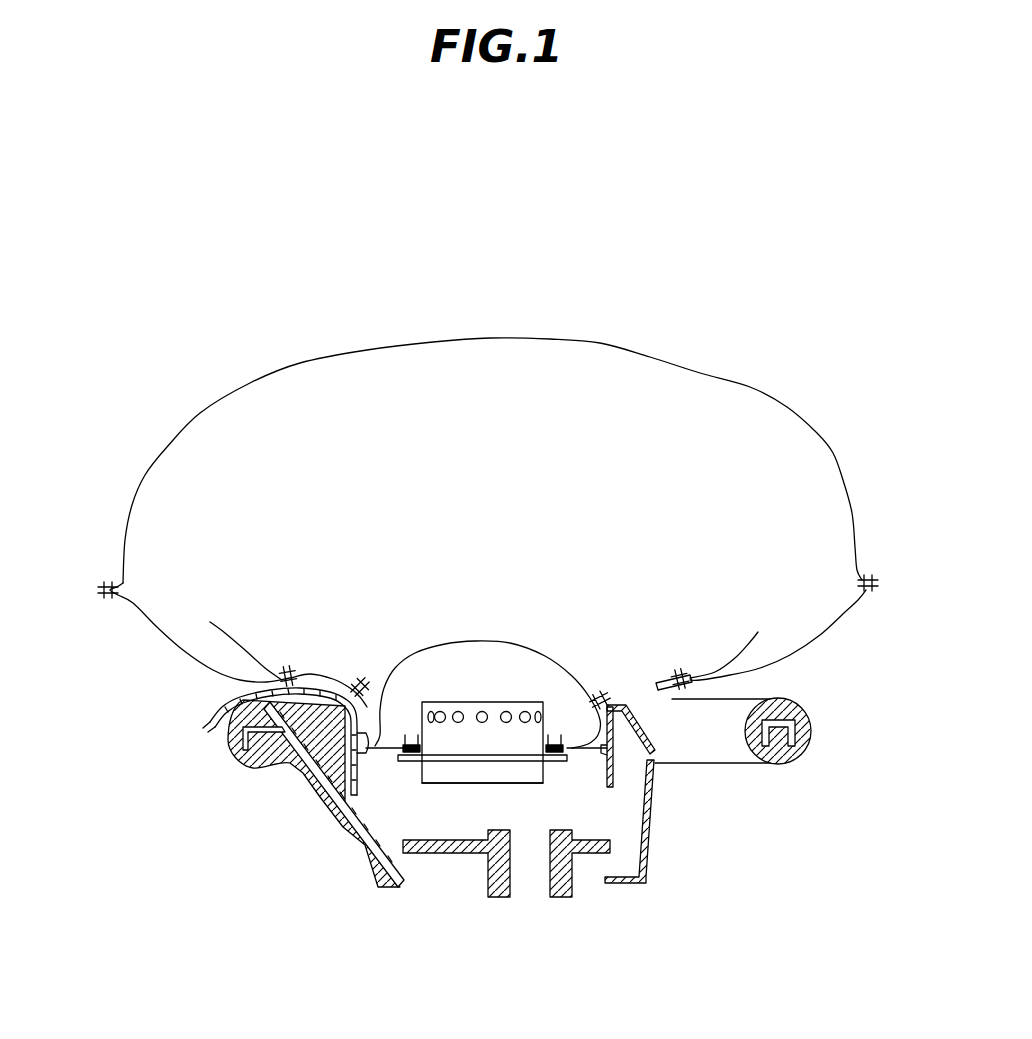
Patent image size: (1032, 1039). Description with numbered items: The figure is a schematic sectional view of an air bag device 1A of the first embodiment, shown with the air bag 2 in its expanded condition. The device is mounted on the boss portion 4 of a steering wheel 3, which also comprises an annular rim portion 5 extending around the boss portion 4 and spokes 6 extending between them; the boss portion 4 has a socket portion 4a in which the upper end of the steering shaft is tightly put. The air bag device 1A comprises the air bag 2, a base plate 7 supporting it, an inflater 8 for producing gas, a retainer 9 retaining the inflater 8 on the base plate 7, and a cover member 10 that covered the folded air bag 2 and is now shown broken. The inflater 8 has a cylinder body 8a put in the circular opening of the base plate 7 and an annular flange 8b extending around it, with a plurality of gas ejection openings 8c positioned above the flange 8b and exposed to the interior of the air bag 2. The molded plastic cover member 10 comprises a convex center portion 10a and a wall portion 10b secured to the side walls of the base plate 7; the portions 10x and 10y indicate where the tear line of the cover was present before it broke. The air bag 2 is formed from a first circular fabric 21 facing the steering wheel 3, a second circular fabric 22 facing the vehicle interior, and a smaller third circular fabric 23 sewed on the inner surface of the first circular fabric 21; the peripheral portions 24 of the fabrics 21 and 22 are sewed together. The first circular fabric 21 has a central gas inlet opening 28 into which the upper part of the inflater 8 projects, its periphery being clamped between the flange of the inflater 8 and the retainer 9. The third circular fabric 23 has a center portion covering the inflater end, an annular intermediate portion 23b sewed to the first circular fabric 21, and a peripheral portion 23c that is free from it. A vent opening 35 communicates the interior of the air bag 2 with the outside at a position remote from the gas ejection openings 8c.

The air bag device 1A is at (842, 241).
The air bag 2 is at (772, 383).
The steering wheel 3 is at (736, 771).
The boss portion 4 is at (466, 855).
The socket portion 4a is at (565, 897).
The rim portion 5 is at (795, 705).
The spokes 6 is at (347, 828).
The base plate 7 is at (380, 752).
The inflater 8 is at (433, 785).
The cylinder body 8a is at (533, 725).
The annular flange 8b is at (553, 762).
The gas ejection openings 8c is at (462, 700).
The retainer 9 is at (408, 733).
The cover member 10 is at (317, 677).
The convex center portion 10a is at (632, 708).
The tear line portion 10x is at (210, 718).
The tear line portion 10y is at (606, 708).
The wall portion 10b is at (650, 767).
The first circular fabric 21 is at (848, 611).
The second circular fabric 22 is at (840, 463).
The third circular fabric 23 is at (493, 730).
The annular intermediate portion 23b is at (360, 682).
The peripheral portion 23c is at (237, 645).
The peripheral portions 24 is at (103, 580).
The gas inlet opening 28 is at (562, 735).
The vent opening 35 is at (657, 685).